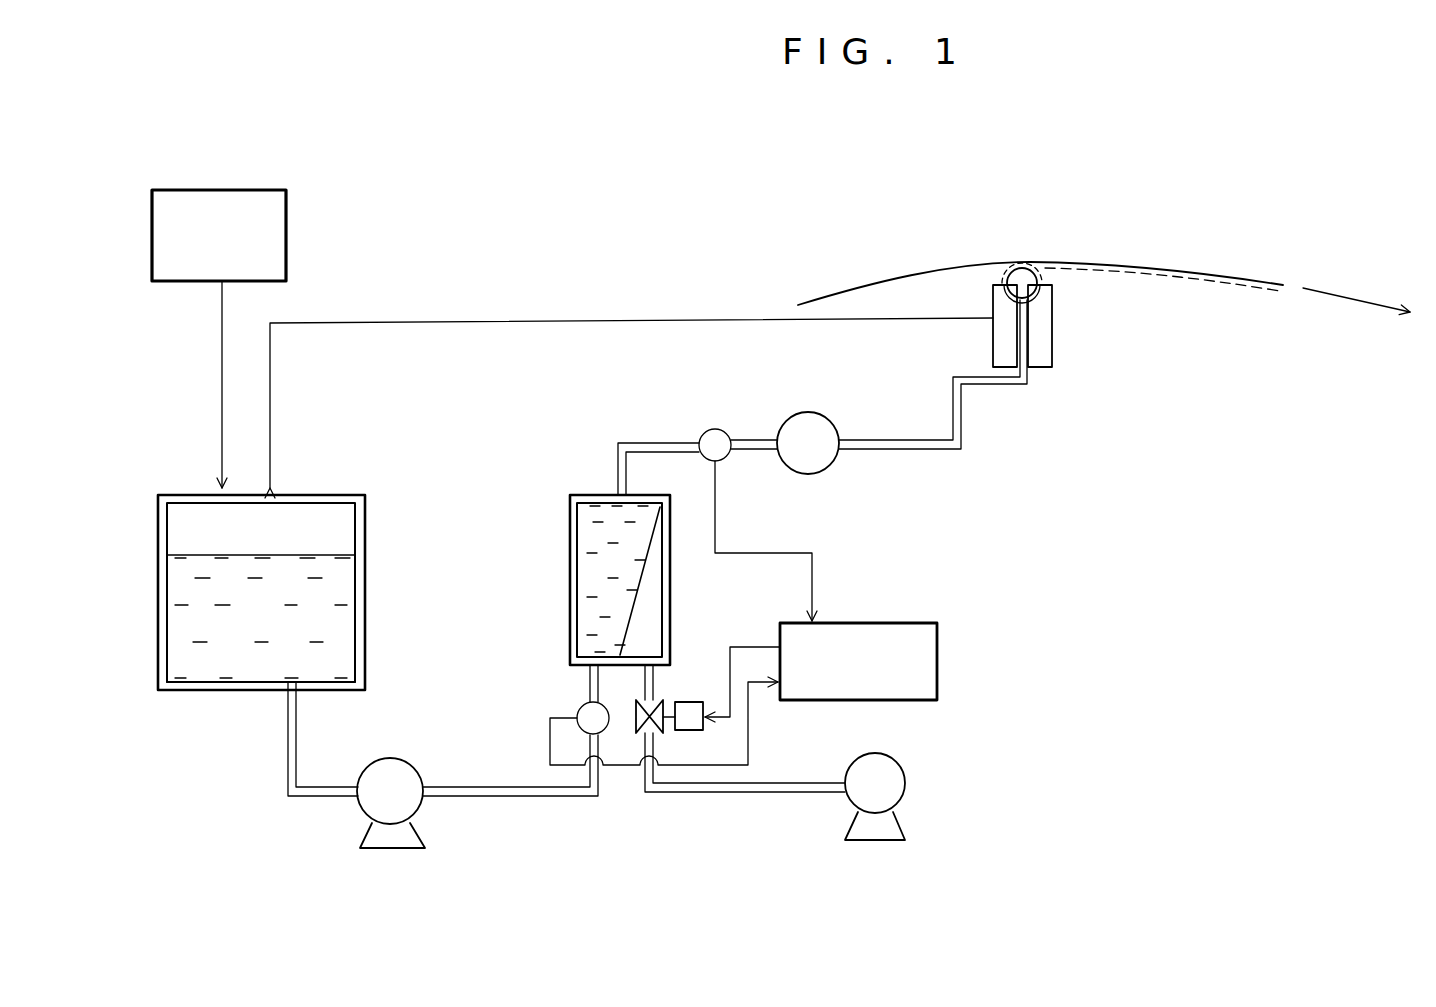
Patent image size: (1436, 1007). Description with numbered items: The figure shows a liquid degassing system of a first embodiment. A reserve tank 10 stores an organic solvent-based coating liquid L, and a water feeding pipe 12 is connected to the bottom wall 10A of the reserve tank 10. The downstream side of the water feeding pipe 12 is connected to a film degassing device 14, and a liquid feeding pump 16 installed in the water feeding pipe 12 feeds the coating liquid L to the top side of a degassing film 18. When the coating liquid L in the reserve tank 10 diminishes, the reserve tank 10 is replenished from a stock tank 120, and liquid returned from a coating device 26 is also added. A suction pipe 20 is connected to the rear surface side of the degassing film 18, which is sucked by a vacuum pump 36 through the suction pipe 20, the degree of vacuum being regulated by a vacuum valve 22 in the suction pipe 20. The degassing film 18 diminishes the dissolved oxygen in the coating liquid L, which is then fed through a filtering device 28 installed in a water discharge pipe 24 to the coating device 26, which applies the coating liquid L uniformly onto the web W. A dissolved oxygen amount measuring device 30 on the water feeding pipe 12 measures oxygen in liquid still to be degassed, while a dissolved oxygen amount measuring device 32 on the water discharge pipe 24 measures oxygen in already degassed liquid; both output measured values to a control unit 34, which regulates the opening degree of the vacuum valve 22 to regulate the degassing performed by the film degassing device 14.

The reserve tank 10 is at (365, 525).
The bottom wall 10A is at (255, 692).
The water feeding pipe 12 is at (297, 716).
The film degassing device 14 is at (570, 545).
The liquid feeding pump 16 is at (390, 758).
The degassing film 18 is at (655, 547).
The suction pipe 20 is at (775, 792).
The vacuum valve 22 is at (690, 698).
The water discharge pipe 24 is at (628, 443).
The coating device 26 is at (1052, 300).
The filtering device 28 is at (808, 412).
The dissolved oxygen amount measuring device 30 is at (577, 712).
The dissolved oxygen amount measuring device 32 is at (715, 428).
The control unit 34 is at (937, 650).
The vacuum pump 36 is at (905, 782).
The stock tank 120 is at (286, 258).
The coating liquid L is at (303, 553).
The web W is at (893, 280).